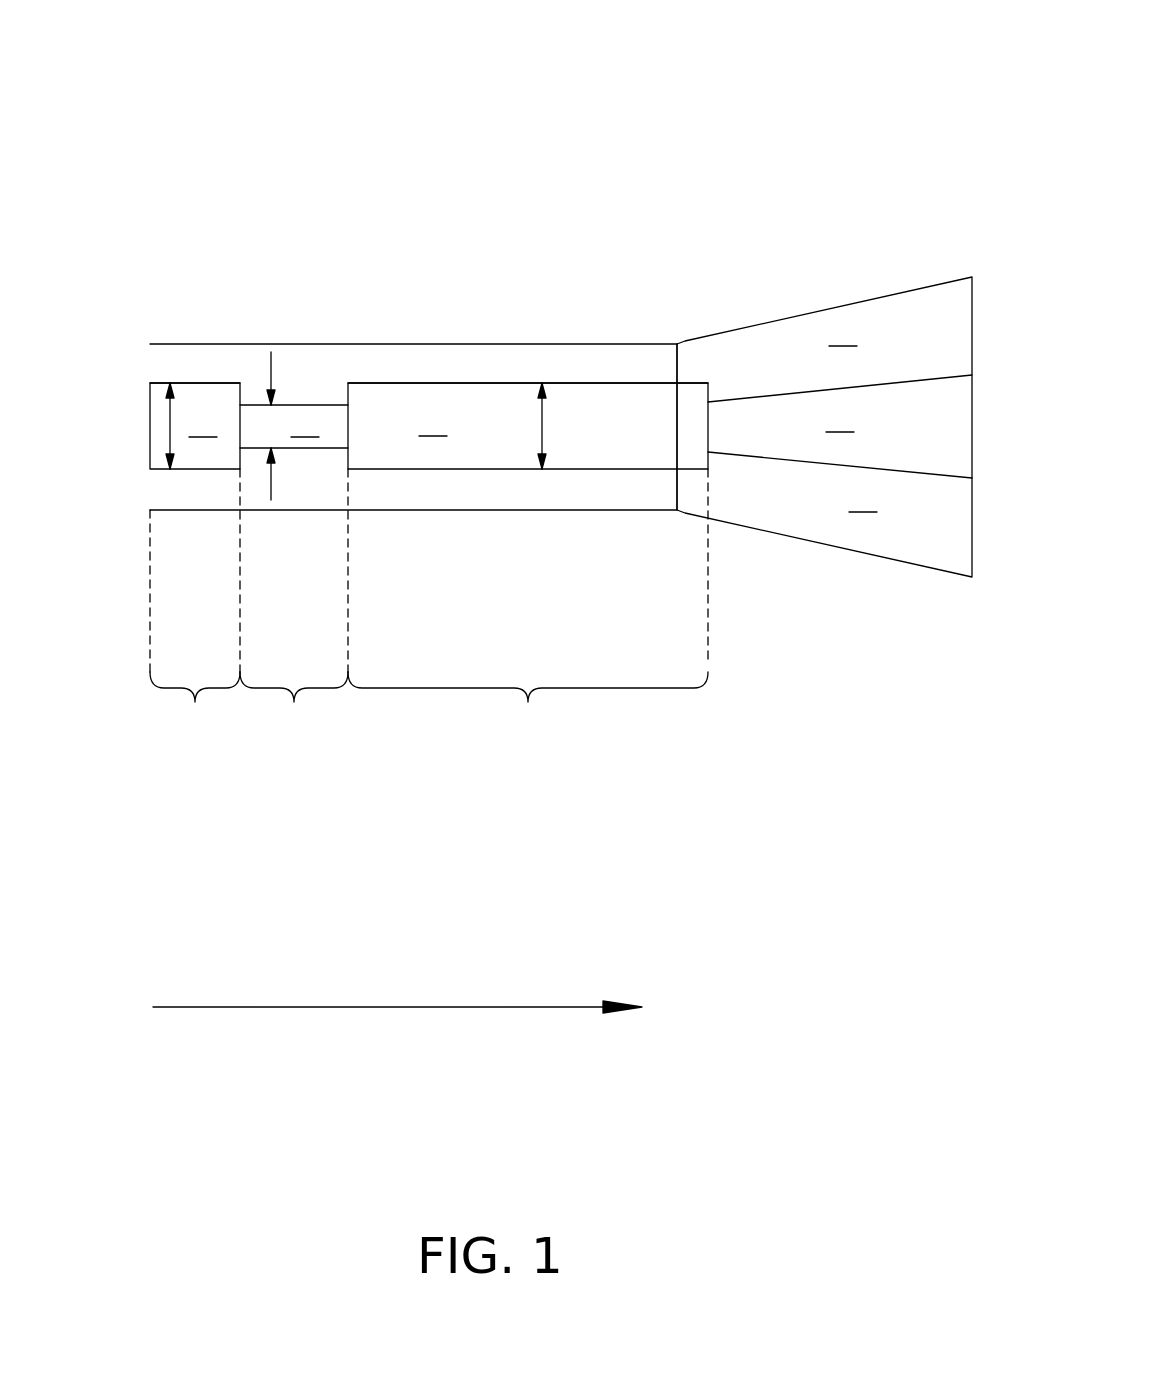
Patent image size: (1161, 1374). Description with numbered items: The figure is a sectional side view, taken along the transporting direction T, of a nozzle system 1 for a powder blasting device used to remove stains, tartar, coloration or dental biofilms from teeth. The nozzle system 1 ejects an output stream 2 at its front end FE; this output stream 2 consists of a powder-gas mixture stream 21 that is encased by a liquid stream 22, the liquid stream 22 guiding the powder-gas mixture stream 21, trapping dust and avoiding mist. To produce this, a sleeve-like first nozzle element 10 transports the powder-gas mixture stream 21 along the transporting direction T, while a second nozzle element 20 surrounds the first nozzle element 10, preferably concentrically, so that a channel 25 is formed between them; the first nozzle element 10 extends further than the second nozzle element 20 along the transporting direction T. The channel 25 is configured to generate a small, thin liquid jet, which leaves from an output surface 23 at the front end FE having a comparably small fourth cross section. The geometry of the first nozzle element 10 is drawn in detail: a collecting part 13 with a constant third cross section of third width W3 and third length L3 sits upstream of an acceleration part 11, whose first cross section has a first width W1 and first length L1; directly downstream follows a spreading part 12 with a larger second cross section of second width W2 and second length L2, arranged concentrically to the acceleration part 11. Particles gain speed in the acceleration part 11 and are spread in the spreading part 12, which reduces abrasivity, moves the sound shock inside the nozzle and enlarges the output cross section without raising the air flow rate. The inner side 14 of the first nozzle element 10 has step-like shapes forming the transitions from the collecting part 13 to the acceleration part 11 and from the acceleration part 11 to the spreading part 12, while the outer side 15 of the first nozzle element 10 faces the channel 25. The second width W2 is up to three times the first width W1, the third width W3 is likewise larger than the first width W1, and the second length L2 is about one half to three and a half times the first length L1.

The nozzle system 1 is at (358, 172).
The output stream 2 is at (817, 102).
The first nozzle element 10 is at (452, 360).
The acceleration part 11 is at (294, 426).
The spreading part 12 is at (528, 426).
The collecting part 13 is at (195, 426).
The inner side 14 is at (597, 383).
The outer side 15 is at (618, 383).
The second nozzle element 20 is at (531, 352).
The powder-gas mixture stream 21 is at (840, 426).
The liquid stream 22 is at (824, 427).
The output surface 23 is at (677, 363).
The channel 25 is at (387, 368).
The front end FE is at (791, 569).
The transporting direction T is at (340, 1007).
The first width W1 is at (272, 470).
The second width W2 is at (544, 470).
The third width W3 is at (168, 432).
The first length L1 is at (294, 704).
The second length L2 is at (528, 704).
The third length L3 is at (195, 704).